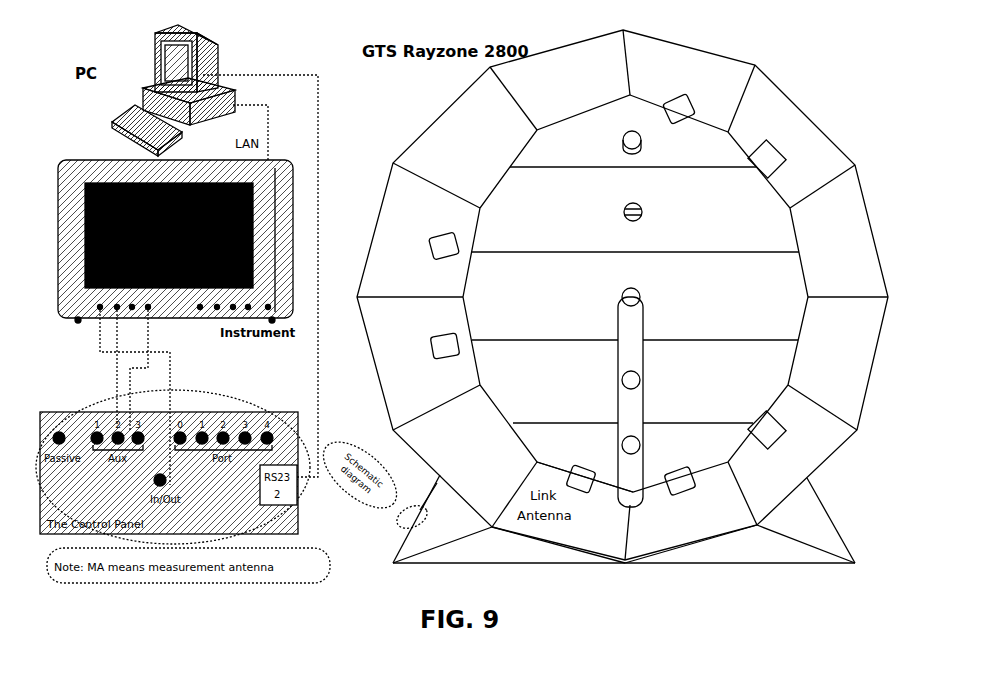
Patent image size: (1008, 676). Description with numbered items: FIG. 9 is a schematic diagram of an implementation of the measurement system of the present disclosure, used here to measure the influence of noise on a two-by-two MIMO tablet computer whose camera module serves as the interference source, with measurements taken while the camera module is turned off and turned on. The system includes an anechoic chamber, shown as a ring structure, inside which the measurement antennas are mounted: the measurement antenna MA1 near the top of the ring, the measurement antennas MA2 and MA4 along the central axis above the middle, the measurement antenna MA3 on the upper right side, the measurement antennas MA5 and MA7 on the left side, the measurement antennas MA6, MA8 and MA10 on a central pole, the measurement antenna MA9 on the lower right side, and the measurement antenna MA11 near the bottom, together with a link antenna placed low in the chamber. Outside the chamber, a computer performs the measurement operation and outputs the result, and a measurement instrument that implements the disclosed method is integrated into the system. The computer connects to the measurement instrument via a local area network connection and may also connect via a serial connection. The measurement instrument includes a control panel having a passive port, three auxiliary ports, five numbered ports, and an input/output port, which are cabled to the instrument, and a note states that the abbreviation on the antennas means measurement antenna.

The measurement antenna MA1 is at (679, 103).
The measurement antenna MA2 is at (654, 142).
The measurement antenna MA3 is at (769, 153).
The measurement antenna MA4 is at (655, 212).
The measurement antenna MA5 is at (415, 250).
The measurement antenna MA6 is at (654, 297).
The measurement antenna MA7 is at (422, 353).
The measurement antenna MA8 is at (654, 380).
The measurement antenna MA9 is at (770, 438).
The measurement antenna MA10 is at (658, 448).
The measurement antenna MA11 is at (680, 490).